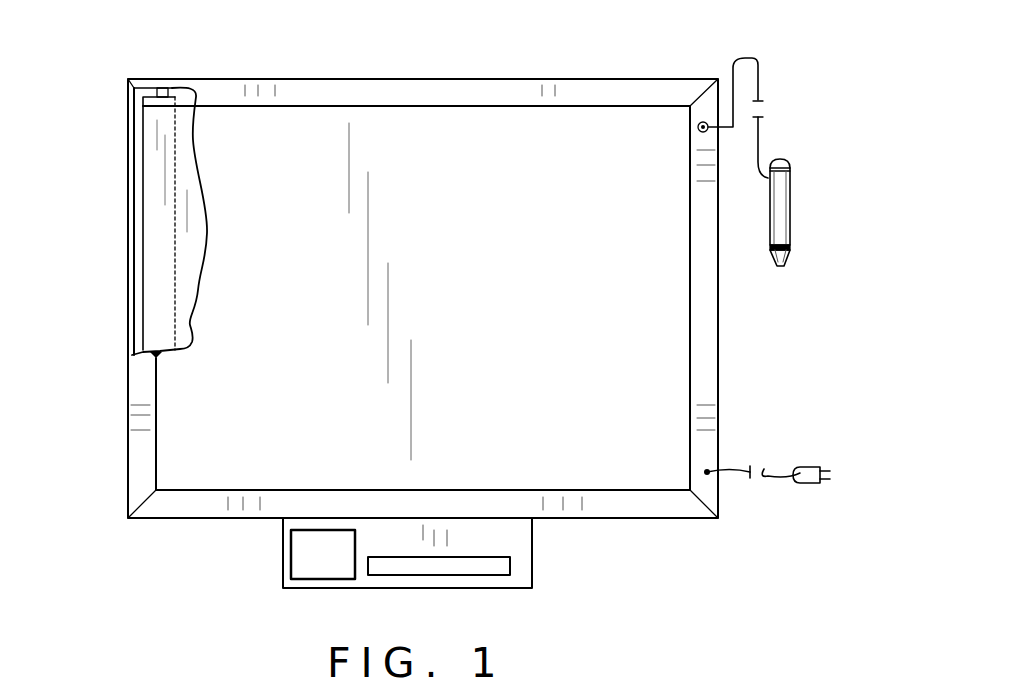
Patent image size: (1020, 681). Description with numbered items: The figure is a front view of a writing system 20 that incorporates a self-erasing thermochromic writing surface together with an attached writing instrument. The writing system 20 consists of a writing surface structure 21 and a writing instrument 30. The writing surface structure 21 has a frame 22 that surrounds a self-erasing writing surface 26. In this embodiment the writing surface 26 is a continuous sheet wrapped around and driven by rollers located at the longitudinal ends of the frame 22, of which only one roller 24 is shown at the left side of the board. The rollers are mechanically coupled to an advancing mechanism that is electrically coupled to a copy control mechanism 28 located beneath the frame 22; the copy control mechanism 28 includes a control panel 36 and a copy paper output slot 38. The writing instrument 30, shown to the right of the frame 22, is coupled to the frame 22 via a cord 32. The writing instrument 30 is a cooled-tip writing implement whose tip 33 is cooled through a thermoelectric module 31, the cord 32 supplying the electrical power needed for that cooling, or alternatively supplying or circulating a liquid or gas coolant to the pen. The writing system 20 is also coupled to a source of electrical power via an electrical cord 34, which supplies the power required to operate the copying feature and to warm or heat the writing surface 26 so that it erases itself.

The writing system 20 is at (366, 46).
The writing surface structure 21 is at (228, 66).
The frame 22 is at (483, 92).
The roller 24 is at (155, 197).
The self-erasing writing surface 26 is at (505, 325).
The copy control mechanism 28 is at (510, 542).
The writing instrument 30 is at (780, 203).
The thermoelectric module 31 is at (790, 248).
The cord 32 is at (748, 57).
The tip 33 is at (782, 267).
The electrical cord 34 is at (781, 475).
The control panel 36 is at (308, 570).
The copy paper output slot 38 is at (497, 567).